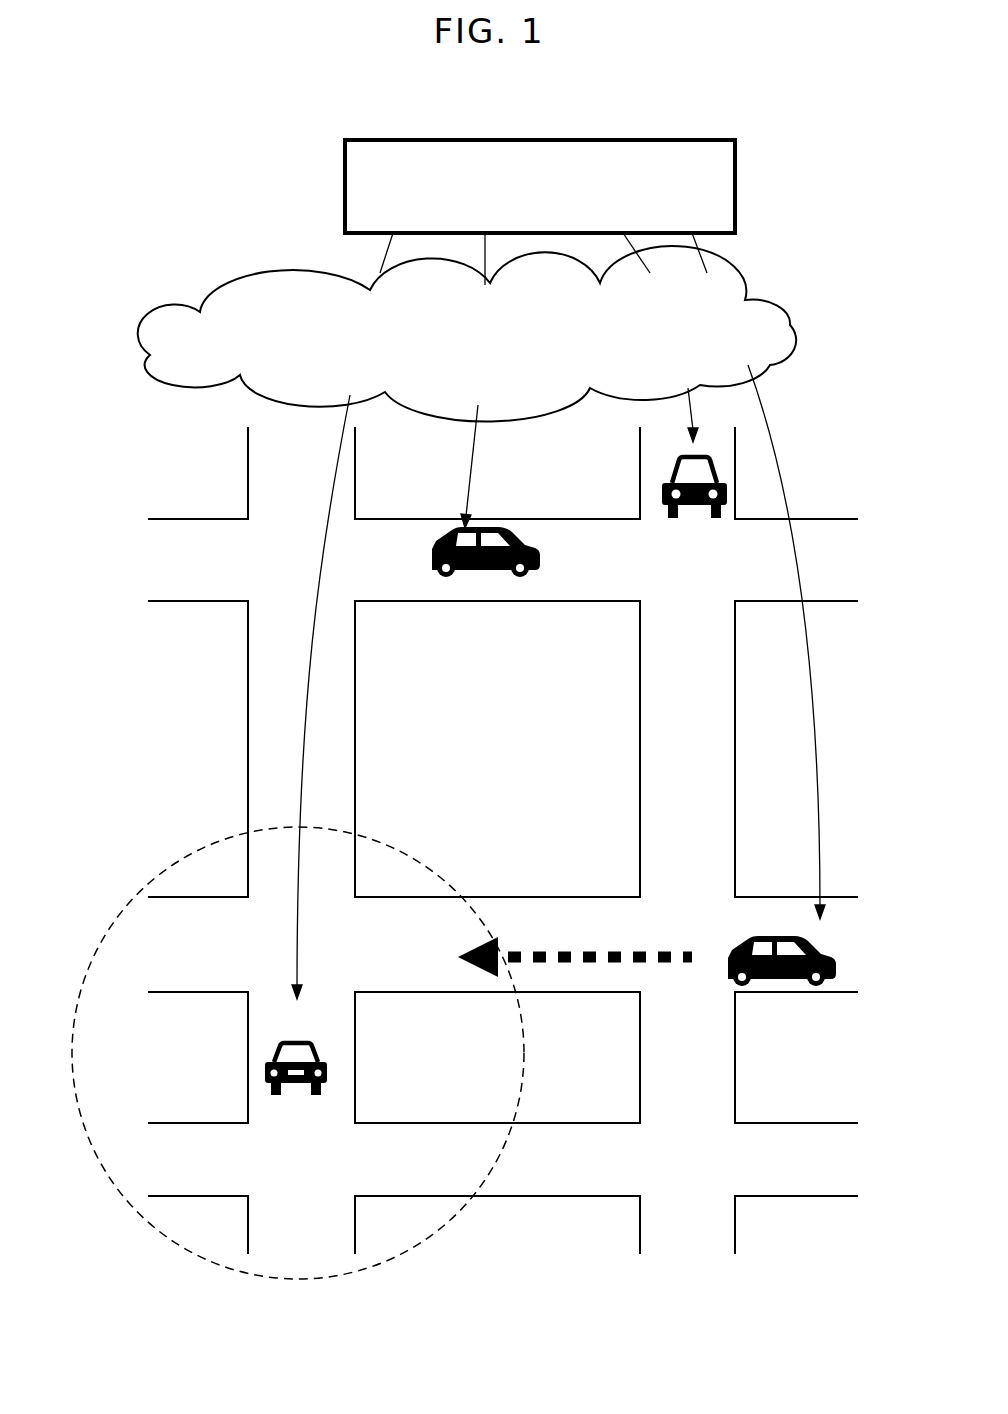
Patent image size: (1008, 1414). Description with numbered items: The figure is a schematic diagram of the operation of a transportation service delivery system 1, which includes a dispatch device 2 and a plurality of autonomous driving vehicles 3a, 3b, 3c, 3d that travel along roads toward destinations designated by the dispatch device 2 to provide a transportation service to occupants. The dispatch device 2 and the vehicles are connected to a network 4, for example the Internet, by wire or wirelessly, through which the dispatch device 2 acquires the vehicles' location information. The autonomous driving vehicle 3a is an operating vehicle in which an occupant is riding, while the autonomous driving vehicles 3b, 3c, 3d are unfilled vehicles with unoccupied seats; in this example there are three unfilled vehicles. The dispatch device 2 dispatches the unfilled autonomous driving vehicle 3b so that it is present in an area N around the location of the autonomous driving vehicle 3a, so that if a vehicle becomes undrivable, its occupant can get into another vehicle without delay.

The transportation service delivery system 1 is at (142, 147).
The dispatch device 2 is at (623, 140).
The network 4 is at (778, 293).
The autonomous driving vehicle 3a is at (328, 1073).
The autonomous driving vehicle 3b is at (768, 976).
The autonomous driving vehicle 3c is at (492, 530).
The autonomous driving vehicle 3d is at (662, 492).
The area N is at (433, 877).